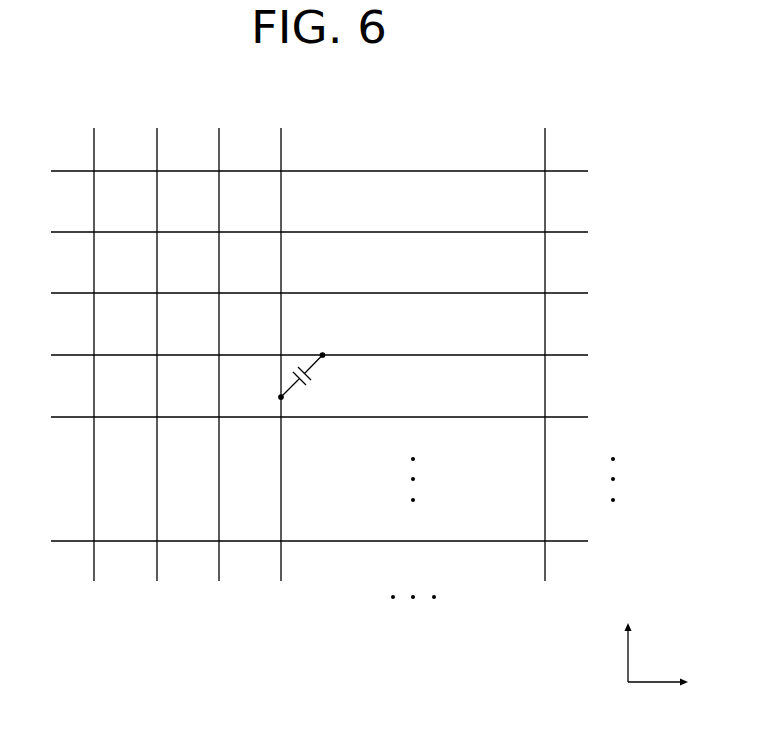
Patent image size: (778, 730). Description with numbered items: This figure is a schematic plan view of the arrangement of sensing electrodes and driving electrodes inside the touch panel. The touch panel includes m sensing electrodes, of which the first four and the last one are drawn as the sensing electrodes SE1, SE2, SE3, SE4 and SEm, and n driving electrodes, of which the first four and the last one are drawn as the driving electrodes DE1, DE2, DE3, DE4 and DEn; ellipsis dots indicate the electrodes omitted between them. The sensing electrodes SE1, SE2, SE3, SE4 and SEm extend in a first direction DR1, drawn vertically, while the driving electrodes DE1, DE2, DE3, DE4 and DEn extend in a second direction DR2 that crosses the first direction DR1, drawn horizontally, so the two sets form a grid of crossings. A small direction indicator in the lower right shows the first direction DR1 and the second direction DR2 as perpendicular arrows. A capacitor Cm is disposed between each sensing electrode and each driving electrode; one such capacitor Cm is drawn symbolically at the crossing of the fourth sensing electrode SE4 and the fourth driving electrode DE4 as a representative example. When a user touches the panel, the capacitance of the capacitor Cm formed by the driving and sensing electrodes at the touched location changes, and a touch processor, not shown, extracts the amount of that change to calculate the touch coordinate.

The driving electrode DE1 is at (340, 172).
The driving electrode DE2 is at (340, 233).
The driving electrode DE3 is at (340, 294).
The driving electrode DE4 is at (340, 356).
The driving electrode DEn is at (340, 541).
The sensing electrode SE1 is at (93, 369).
The sensing electrode SE2 is at (157, 369).
The sensing electrode SE3 is at (220, 369).
The sensing electrode SE4 is at (281, 369).
The sensing electrode SEm is at (545, 369).
The capacitor Cm is at (306, 377).
The first direction DR1 is at (628, 638).
The second direction DR2 is at (678, 682).